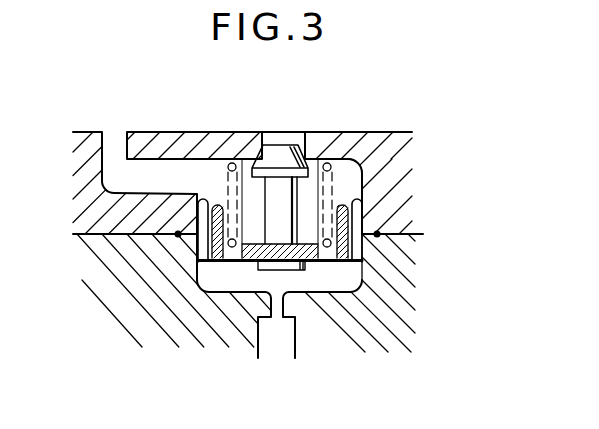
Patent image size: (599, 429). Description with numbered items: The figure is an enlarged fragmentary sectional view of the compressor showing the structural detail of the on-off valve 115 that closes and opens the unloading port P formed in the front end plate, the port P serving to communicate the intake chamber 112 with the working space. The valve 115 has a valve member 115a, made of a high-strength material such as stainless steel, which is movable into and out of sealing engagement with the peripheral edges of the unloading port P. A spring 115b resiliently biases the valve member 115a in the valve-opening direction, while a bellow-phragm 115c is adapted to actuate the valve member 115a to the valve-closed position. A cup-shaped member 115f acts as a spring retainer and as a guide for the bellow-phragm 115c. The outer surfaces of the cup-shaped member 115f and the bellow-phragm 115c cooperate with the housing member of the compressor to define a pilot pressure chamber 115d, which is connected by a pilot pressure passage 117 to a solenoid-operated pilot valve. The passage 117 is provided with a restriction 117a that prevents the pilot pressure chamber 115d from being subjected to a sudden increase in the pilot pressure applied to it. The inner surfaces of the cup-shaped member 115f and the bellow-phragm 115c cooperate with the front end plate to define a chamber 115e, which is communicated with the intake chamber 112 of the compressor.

The intake chamber 112 is at (148, 163).
The on-off valve 115 is at (283, 207).
The valve member 115a is at (281, 152).
The spring 115b is at (232, 163).
The bellow-phragm 115c is at (212, 248).
The pilot pressure chamber 115d is at (217, 275).
The chamber 115e is at (352, 156).
The cup-shaped member 115f is at (338, 263).
The unloading port P is at (310, 160).
The pilot pressure passage 117 is at (275, 342).
The restriction 117a is at (278, 308).